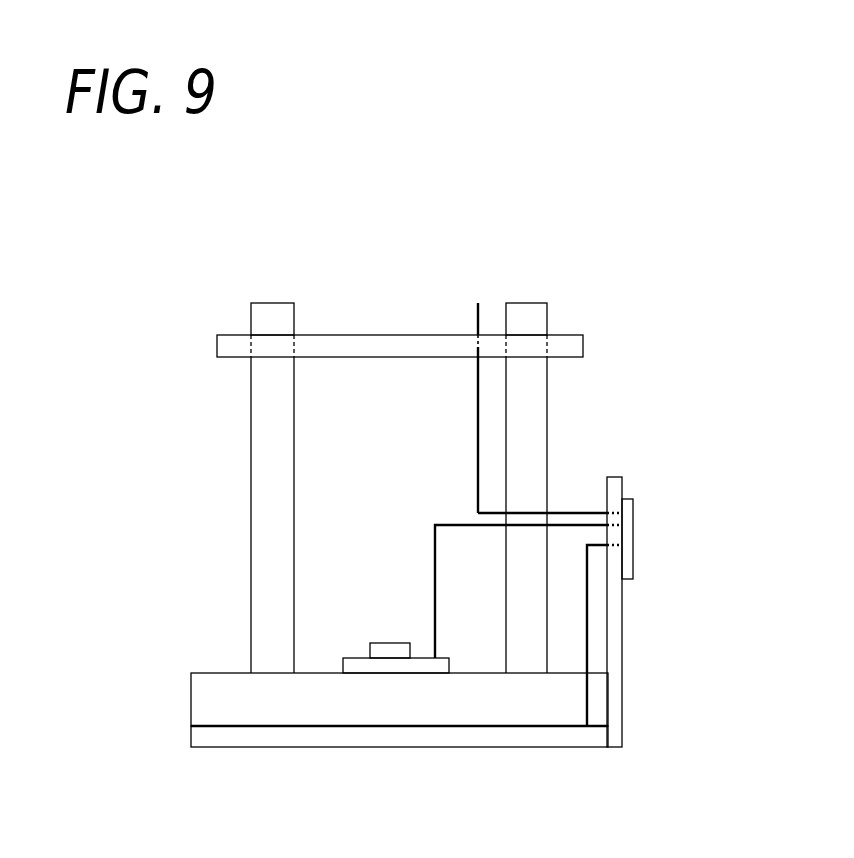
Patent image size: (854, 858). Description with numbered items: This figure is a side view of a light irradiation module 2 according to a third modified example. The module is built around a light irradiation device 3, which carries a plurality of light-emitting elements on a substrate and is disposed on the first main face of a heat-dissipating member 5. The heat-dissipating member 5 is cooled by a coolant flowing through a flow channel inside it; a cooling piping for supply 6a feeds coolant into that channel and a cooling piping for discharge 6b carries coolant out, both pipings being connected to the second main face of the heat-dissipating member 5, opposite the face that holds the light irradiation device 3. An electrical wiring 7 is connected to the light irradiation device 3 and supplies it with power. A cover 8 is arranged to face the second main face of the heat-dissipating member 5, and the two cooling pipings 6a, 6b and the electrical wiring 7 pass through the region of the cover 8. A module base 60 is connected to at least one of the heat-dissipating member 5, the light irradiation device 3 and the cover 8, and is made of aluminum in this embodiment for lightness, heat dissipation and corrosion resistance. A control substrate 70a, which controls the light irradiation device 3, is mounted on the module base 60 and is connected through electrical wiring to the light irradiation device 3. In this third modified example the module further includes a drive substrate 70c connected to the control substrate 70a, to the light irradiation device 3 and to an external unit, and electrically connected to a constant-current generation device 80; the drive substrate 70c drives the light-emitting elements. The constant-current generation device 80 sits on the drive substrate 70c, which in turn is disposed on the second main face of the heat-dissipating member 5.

The light irradiation module 2 is at (524, 214).
The light irradiation device 3 is at (317, 737).
The heat-dissipating member 5 is at (266, 708).
The cooling piping for supply 6a is at (530, 315).
The cooling piping for discharge 6b is at (270, 315).
The electrical wiring 7 is at (477, 315).
The cover 8 is at (565, 348).
The module base 60 is at (613, 657).
The control substrate 70a is at (632, 513).
The drive substrate 70c is at (417, 666).
The constant-current generation device 80 is at (388, 653).